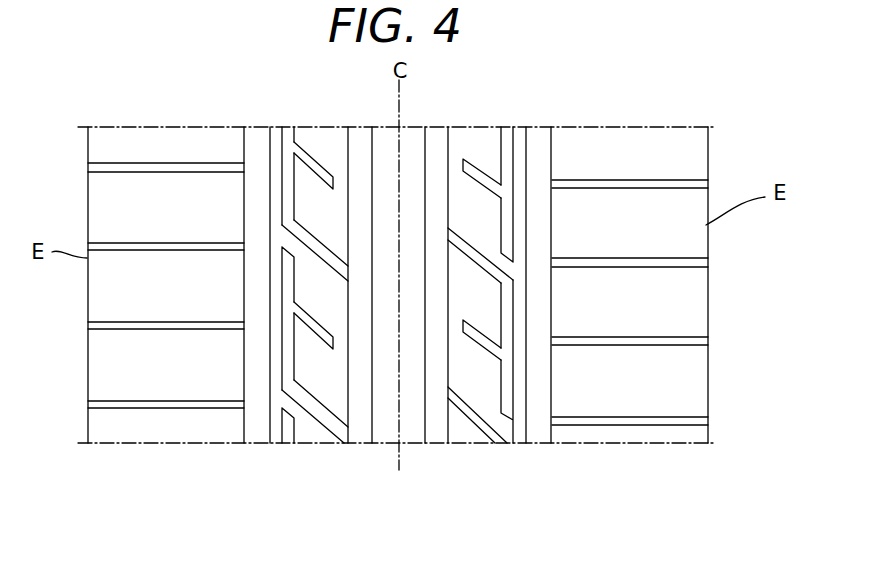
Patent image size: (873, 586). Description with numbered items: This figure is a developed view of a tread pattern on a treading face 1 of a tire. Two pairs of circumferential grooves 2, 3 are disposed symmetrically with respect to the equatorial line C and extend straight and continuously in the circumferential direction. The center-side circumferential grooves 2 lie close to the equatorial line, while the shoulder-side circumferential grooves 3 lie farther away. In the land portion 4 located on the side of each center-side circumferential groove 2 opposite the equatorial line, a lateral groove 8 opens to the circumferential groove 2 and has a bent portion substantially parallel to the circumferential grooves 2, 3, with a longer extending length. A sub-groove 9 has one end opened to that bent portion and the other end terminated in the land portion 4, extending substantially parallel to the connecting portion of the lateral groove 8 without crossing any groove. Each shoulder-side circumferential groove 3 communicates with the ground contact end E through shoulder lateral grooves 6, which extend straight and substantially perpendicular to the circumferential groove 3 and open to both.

The treading face 1 is at (407, 462).
The center-side circumferential groove 2 is at (358, 138).
The shoulder-side circumferential groove 3 is at (260, 137).
The land portion 4 is at (407, 313).
The shoulder lateral groove 6 is at (173, 247).
The lateral groove 8 is at (315, 252).
The sub-groove 9 is at (315, 175).